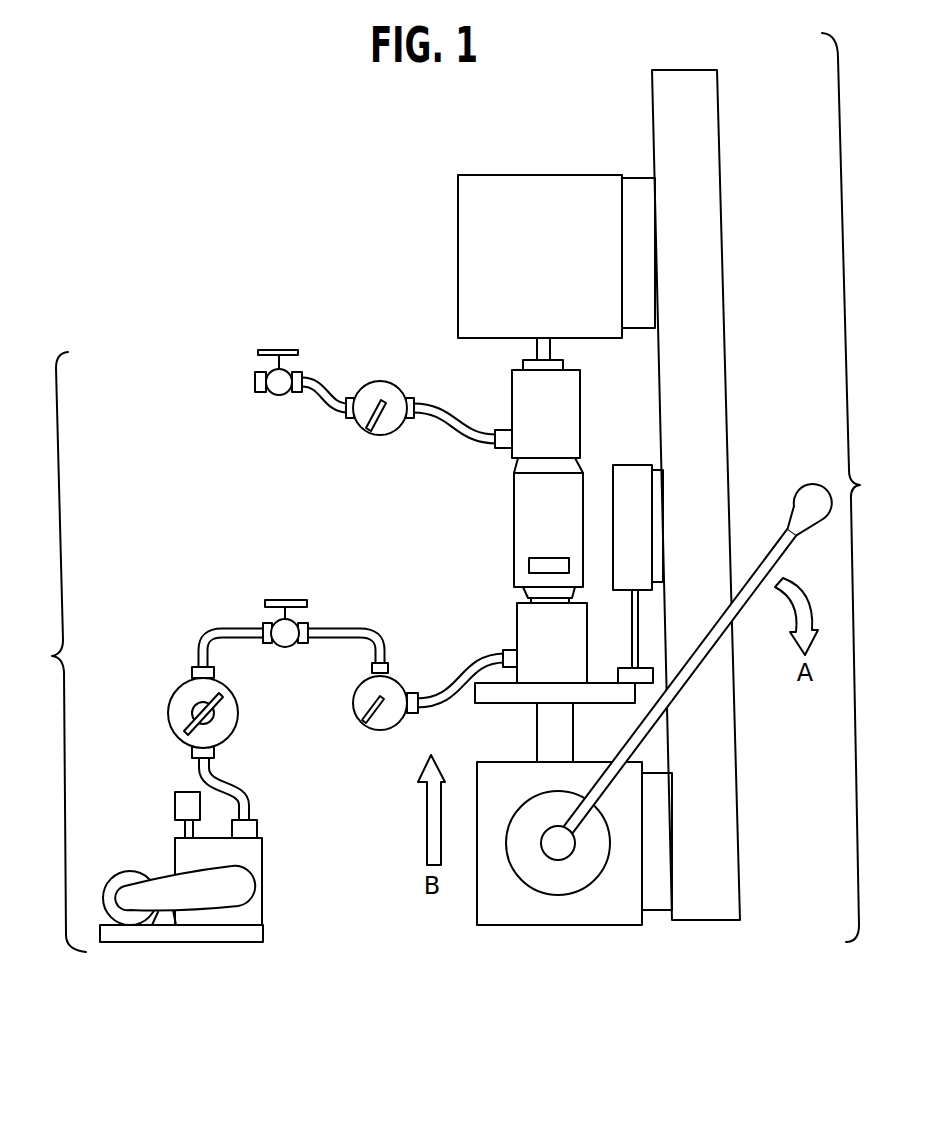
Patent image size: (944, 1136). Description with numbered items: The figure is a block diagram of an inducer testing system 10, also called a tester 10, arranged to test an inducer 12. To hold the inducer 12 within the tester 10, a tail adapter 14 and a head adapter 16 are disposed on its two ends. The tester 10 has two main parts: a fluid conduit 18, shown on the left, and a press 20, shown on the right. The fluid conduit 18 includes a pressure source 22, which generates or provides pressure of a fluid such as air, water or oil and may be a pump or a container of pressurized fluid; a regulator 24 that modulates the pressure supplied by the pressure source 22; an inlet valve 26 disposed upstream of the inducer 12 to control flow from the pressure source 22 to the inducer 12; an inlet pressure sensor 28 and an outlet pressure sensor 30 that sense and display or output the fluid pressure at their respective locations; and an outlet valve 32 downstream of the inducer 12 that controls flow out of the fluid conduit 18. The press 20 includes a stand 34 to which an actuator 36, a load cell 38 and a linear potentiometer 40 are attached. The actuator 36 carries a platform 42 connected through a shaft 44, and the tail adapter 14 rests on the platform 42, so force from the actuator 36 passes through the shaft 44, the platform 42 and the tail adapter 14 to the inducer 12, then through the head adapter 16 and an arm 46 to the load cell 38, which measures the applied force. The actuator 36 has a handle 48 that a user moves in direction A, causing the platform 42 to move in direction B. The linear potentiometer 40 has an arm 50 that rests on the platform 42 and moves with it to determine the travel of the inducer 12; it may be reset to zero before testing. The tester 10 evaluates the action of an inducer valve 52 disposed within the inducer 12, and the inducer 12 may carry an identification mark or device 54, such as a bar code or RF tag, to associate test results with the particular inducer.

The inducer testing system 10 is at (388, 123).
The inducer 12 is at (563, 534).
The tail adapter 14 is at (566, 655).
The head adapter 16 is at (532, 436).
The fluid conduit 18 is at (52, 652).
The press 20 is at (856, 487).
The pressure source 22 is at (222, 881).
The regulator 24 is at (238, 703).
The inlet valve 26 is at (296, 598).
The inlet pressure sensor 28 is at (402, 684).
The outlet pressure sensor 30 is at (372, 381).
The outlet valve 32 is at (292, 348).
The stand 34 is at (692, 862).
The actuator 36 is at (583, 925).
The load cell 38 is at (527, 274).
The linear potentiometer 40 is at (618, 539).
The platform 42 is at (487, 703).
The shaft 44 is at (573, 733).
The arm 46 is at (565, 368).
The handle 48 is at (805, 483).
The arm 50 is at (628, 668).
The inducer valve 52 is at (518, 530).
The identification mark and/or device 54 is at (529, 566).